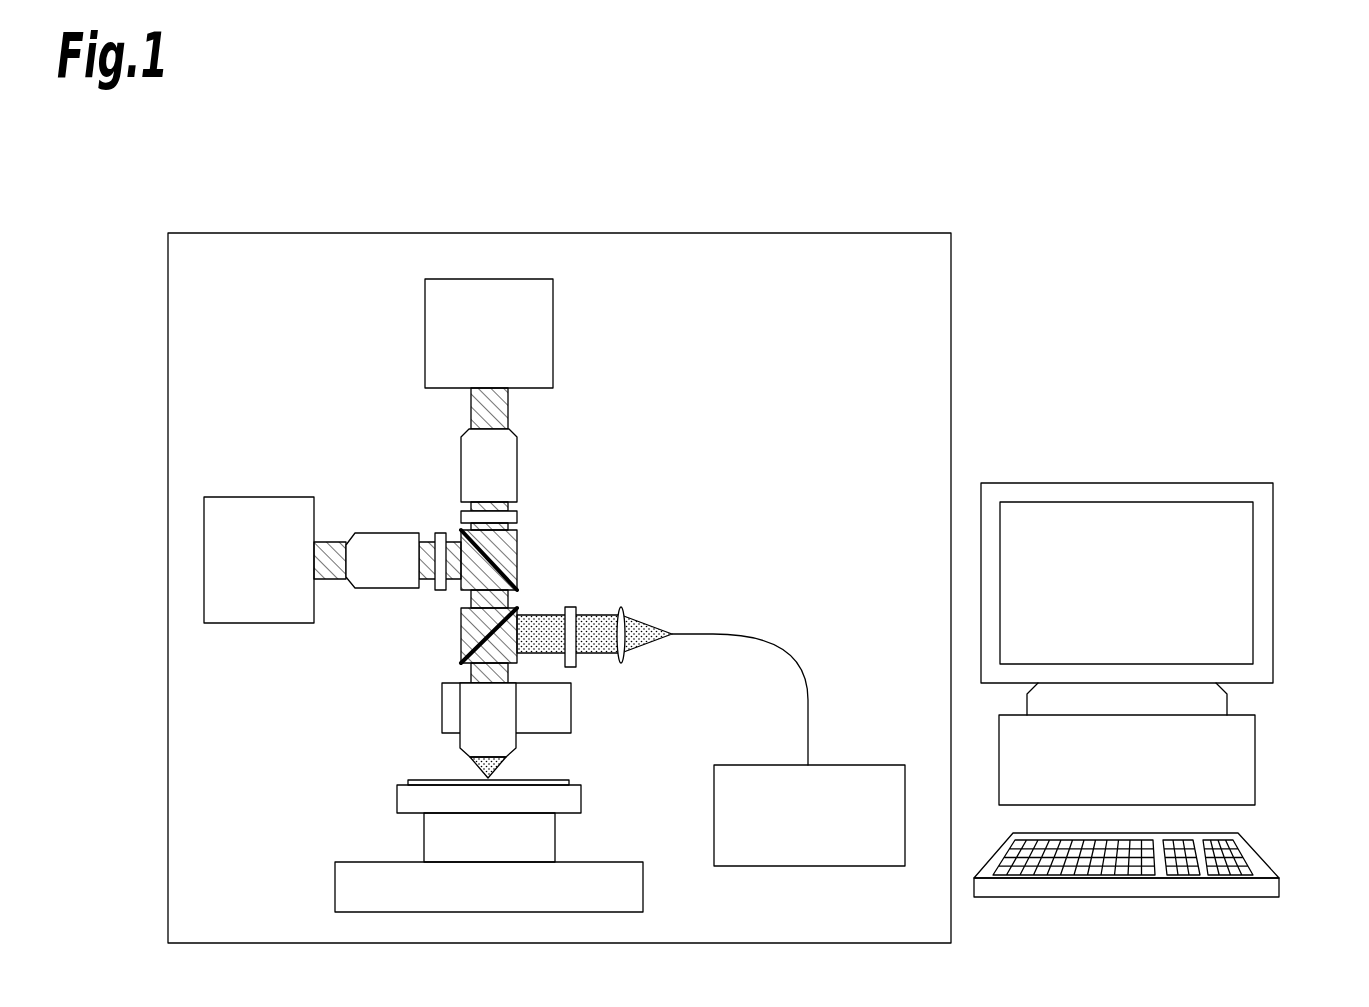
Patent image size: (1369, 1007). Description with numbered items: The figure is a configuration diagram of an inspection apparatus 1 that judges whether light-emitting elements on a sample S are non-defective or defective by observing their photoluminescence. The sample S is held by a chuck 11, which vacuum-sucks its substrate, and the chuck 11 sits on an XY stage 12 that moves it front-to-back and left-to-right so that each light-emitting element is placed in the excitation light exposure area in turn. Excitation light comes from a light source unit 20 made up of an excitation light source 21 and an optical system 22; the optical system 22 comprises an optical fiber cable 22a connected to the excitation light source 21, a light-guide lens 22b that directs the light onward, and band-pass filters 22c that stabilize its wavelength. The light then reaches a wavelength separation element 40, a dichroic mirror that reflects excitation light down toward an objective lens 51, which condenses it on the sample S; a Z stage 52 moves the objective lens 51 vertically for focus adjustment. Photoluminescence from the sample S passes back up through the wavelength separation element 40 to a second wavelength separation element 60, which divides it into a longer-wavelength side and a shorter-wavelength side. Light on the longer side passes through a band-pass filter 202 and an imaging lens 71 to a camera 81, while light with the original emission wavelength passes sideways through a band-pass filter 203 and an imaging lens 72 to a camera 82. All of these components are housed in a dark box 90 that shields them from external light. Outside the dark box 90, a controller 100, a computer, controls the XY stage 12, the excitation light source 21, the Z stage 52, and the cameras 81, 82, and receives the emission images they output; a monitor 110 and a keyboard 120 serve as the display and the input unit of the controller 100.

The inspection apparatus 1 is at (356, 178).
The dark box 90 is at (951, 334).
The camera 81 is at (553, 318).
The imaging lens 71 is at (517, 448).
The band-pass filter 202 is at (517, 512).
The wavelength separation element 60 is at (518, 528).
The wavelength separation element 40 is at (517, 608).
The camera 82 is at (272, 497).
The imaging lens 72 is at (388, 533).
The band-pass filter 203 is at (438, 592).
The light source unit 20 is at (828, 574).
The optical system 22 is at (783, 534).
The optical fiber cable 22a is at (713, 633).
The light-guide lens 22b is at (622, 608).
The band-pass filter 22c is at (572, 607).
The excitation light source 21 is at (860, 765).
The Z stage 52 is at (571, 700).
The objective lens 51 is at (518, 738).
The sample S is at (423, 780).
The chuck 11 is at (397, 800).
The XY stage 12 is at (424, 832).
The monitor 110 is at (1273, 575).
The controller 100 is at (1255, 748).
The keyboard 120 is at (1262, 848).